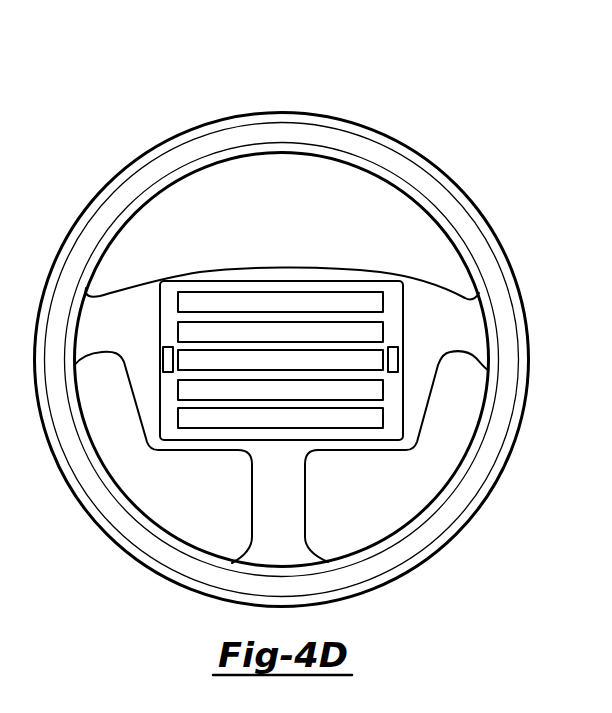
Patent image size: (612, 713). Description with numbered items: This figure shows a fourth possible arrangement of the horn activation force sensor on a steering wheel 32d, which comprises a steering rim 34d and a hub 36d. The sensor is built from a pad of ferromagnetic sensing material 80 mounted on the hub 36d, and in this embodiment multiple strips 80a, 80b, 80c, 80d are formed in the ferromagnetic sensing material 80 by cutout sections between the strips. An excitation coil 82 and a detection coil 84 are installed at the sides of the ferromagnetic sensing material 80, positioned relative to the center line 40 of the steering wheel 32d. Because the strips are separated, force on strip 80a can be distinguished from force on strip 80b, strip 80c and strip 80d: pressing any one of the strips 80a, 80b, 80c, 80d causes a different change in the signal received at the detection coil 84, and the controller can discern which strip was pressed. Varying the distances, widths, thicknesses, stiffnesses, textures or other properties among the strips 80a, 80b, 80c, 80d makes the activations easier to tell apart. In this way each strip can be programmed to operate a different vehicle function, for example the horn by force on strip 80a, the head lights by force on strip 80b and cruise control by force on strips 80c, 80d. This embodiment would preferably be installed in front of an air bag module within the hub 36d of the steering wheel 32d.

The steering wheel 32d is at (287, 99).
The steering rim 34d is at (430, 161).
The hub 36d is at (281, 266).
The center line 40 is at (280, 357).
The ferromagnetic sensing material 80 is at (160, 301).
The strip 80a is at (240, 315).
The strip 80b is at (358, 348).
The strip 80c is at (193, 374).
The strip 80d is at (205, 407).
The excitation coil 82 is at (158, 358).
The detection coil 84 is at (400, 358).